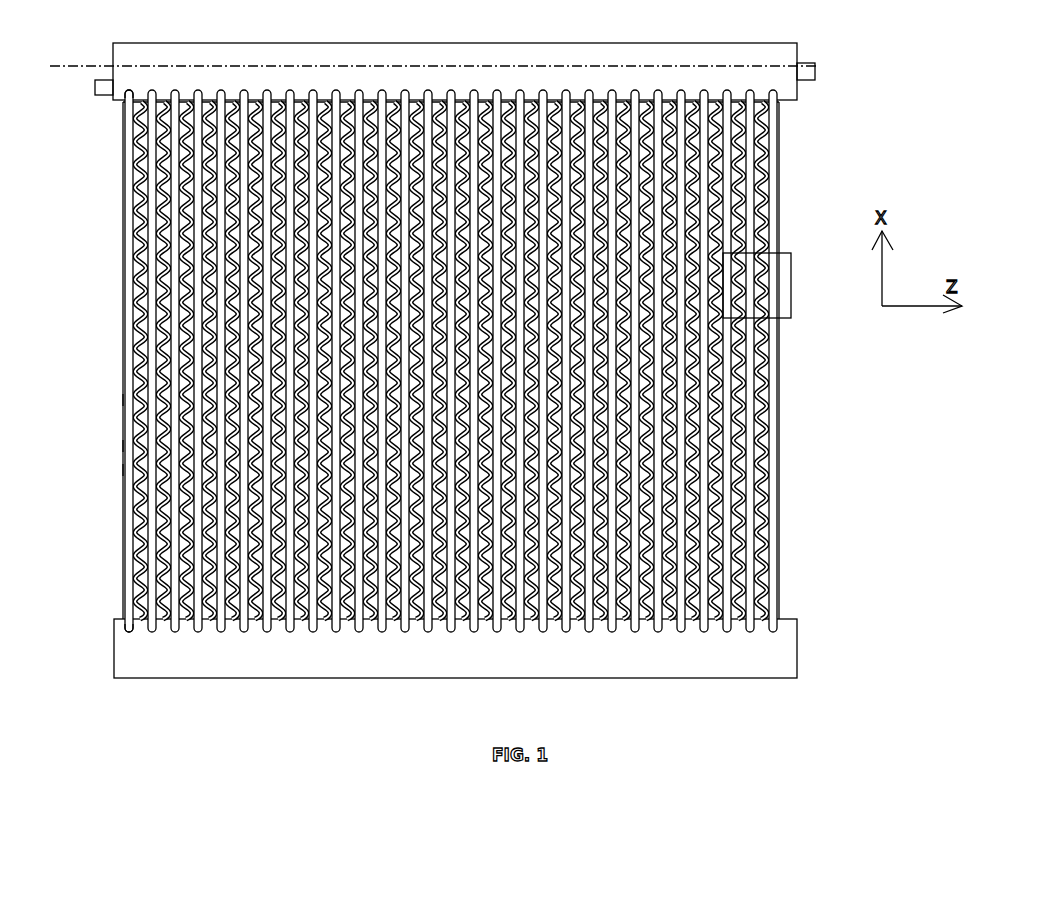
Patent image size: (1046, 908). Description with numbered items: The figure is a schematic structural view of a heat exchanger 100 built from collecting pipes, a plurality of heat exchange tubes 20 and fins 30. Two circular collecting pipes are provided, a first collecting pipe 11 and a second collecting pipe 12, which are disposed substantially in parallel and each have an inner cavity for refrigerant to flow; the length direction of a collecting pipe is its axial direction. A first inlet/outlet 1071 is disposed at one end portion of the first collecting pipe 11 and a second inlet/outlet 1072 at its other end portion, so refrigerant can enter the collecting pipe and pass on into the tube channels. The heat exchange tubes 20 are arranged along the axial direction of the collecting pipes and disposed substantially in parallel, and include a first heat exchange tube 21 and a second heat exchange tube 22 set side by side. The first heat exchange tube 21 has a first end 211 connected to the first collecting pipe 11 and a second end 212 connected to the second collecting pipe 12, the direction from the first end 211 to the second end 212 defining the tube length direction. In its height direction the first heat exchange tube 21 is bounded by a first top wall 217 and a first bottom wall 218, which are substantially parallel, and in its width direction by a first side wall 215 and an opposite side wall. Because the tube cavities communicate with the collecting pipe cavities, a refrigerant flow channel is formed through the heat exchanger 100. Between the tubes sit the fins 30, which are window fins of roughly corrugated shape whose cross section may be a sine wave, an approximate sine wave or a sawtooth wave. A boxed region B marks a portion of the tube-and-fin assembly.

The heat exchanger 100 is at (462, 344).
The first collecting pipe 11 is at (478, 63).
The second collecting pipe 12 is at (481, 639).
The first inlet/outlet 1071 is at (82, 104).
The second inlet/outlet 1072 is at (824, 86).
The heat exchange tubes 20 is at (430, 368).
The first heat exchange tube 21 is at (89, 368).
The second heat exchange tube 22 is at (104, 360).
The first end 211 is at (102, 126).
The second end 212 is at (89, 635).
The first side wall 215 is at (95, 412).
The first top wall 217 is at (89, 480).
The first bottom wall 218 is at (93, 451).
The fins 30 is at (481, 361).
The detail region B is at (780, 273).